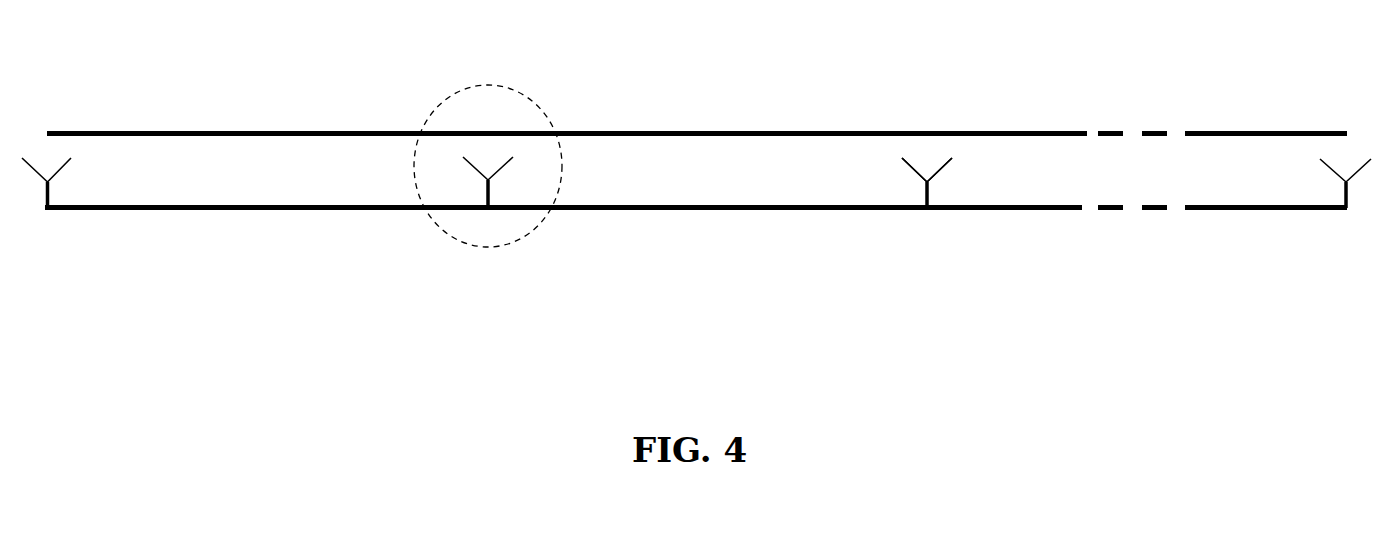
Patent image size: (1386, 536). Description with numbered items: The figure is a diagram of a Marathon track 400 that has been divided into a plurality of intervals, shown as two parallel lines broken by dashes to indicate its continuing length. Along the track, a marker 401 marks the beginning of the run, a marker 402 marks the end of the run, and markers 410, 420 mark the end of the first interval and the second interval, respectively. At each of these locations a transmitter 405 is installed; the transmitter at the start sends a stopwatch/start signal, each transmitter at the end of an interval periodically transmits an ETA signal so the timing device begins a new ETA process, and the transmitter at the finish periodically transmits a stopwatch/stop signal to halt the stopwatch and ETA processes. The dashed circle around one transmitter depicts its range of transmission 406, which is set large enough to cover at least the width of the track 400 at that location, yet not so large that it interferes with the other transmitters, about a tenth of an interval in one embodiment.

The Marathon track 400 is at (1015, 58).
The marker 401 is at (46, 204).
The marker 402 is at (1345, 204).
The transmitter 405 is at (962, 176).
The range of transmission 406 is at (530, 100).
The marker 410 is at (488, 197).
The marker 420 is at (927, 200).